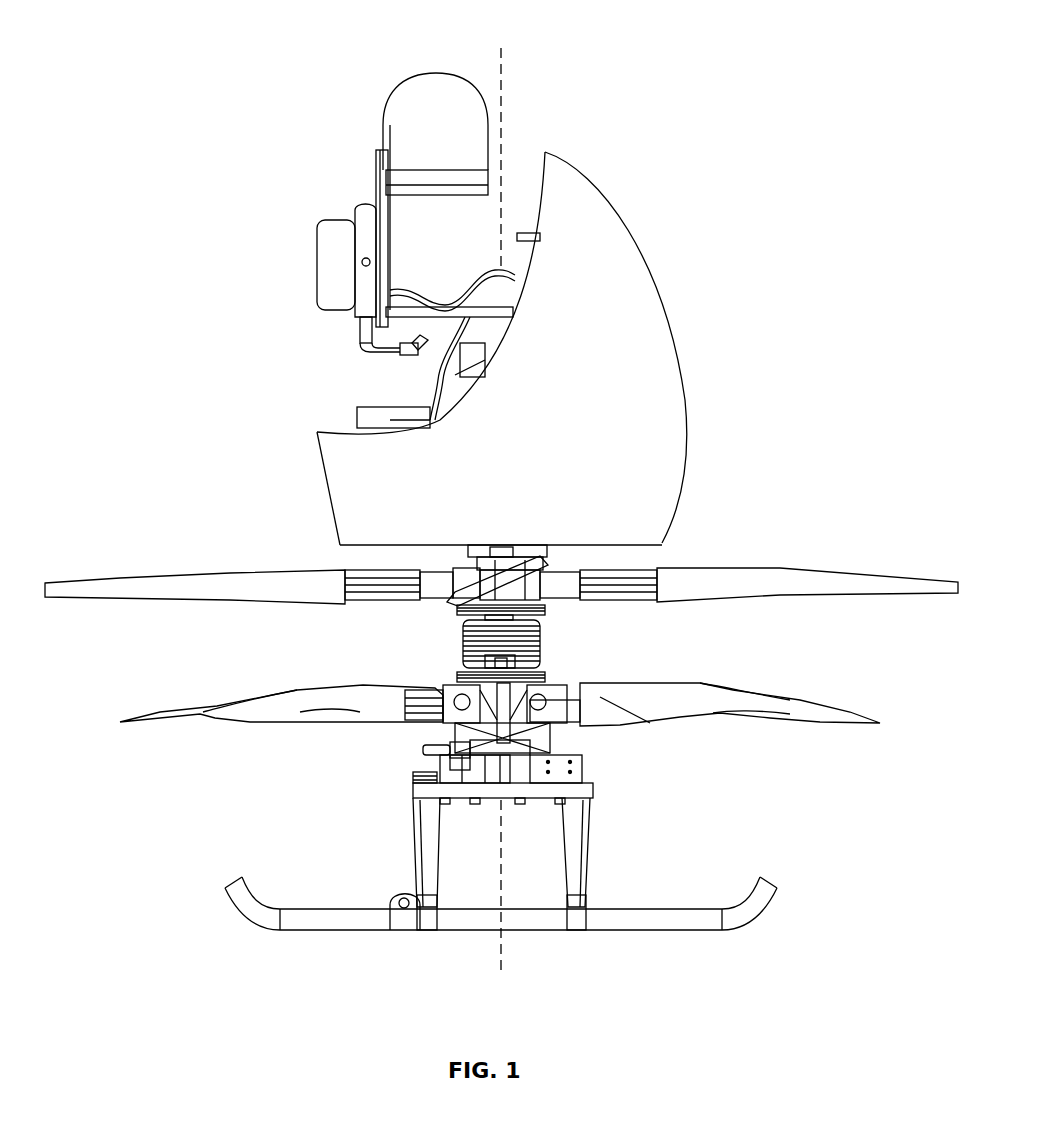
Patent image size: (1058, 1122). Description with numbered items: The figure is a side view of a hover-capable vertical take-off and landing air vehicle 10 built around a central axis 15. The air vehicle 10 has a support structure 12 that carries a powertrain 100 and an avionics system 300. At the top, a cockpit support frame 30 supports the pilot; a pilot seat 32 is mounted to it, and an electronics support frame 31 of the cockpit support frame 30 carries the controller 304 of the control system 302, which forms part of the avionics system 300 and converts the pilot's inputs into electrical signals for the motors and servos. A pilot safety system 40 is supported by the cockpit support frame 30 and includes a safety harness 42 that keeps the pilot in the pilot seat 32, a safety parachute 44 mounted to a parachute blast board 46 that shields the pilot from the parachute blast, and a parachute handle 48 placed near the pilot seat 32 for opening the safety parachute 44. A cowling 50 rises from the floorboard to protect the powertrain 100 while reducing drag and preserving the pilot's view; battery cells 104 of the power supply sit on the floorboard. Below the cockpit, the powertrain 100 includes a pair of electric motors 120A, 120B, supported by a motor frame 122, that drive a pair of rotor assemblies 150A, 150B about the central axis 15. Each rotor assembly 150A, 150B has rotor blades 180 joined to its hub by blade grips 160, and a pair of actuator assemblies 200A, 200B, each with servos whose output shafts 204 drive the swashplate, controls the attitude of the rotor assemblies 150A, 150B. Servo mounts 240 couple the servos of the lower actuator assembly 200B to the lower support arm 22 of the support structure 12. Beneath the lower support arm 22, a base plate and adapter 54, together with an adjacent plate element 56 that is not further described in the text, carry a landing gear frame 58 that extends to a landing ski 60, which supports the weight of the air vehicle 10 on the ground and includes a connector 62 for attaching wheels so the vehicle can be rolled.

The air vehicle 10 is at (170, 28).
The support structure 12 is at (580, 860).
The central axis 15 is at (503, 70).
The lower support arm 22 is at (585, 768).
The cockpit support frame 30 is at (430, 394).
The electronics support frame 31 is at (488, 370).
The pilot seat 32 is at (417, 283).
The pilot safety system 40 is at (360, 107).
The safety harness 42 is at (413, 77).
The safety parachute 44 is at (332, 262).
The parachute blast board 46 is at (378, 178).
The parachute handle 48 is at (400, 352).
The cowling 50 is at (648, 262).
The adapter 54 is at (412, 795).
The plate bracket 56 is at (413, 780).
The landing gear frame 58 is at (585, 832).
The landing ski 60 is at (667, 932).
The connector 62 is at (395, 898).
The powertrain 100 is at (302, 654).
The battery cells 104 is at (357, 415).
The first electric motor 120A is at (546, 663).
The second electric motor 120B is at (462, 640).
The motor frame 122 is at (548, 666).
The first rotor assembly 150A is at (207, 478).
The second rotor assembly 150B is at (161, 738).
The blade grip 160 is at (433, 568).
The rotor blade 180 is at (72, 582).
The first actuator assembly 200A is at (497, 545).
The second actuator assembly 200B is at (575, 745).
The output shaft 204 is at (425, 748).
The servo mount 240 is at (455, 760).
The avionics system 300 is at (596, 208).
The control system 302 is at (480, 350).
The controller 304 is at (472, 360).